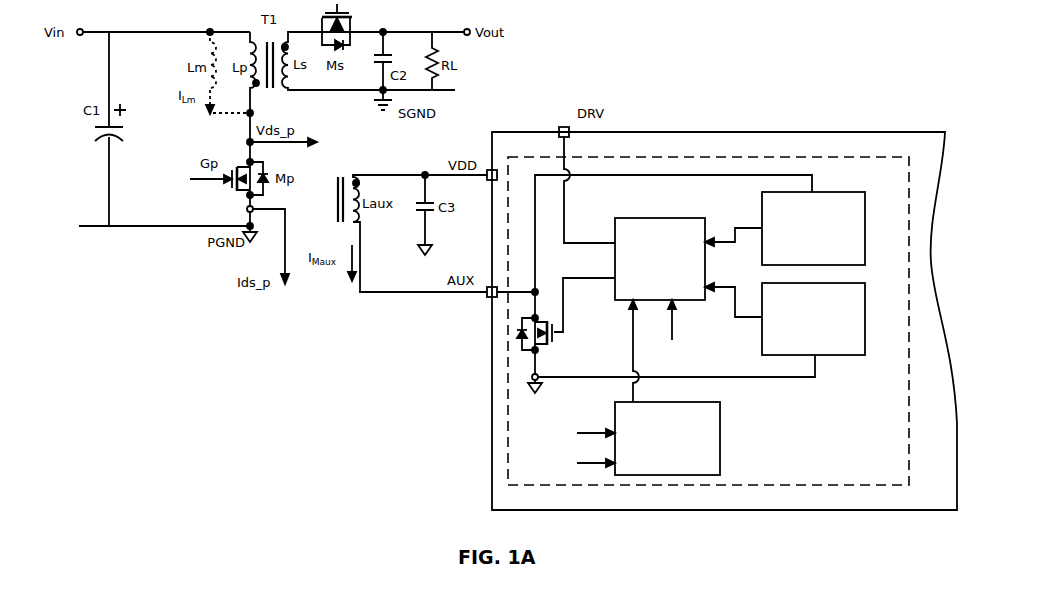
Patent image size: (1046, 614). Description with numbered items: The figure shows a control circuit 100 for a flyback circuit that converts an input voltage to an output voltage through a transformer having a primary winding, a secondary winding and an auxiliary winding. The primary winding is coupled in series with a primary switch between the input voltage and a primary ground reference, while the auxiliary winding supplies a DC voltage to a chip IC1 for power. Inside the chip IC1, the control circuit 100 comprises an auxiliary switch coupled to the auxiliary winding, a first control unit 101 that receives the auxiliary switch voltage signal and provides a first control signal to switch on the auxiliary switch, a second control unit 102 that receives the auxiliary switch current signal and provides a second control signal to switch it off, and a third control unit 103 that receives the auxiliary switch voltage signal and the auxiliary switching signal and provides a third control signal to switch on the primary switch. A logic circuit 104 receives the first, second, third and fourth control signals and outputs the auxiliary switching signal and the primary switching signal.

The control circuit 100 is at (823, 443).
The first control unit 101 is at (813, 228).
The second control unit 102 is at (813, 319).
The third control unit 103 is at (667, 438).
The logic circuit 104 is at (660, 259).
The chip IC1 is at (867, 133).